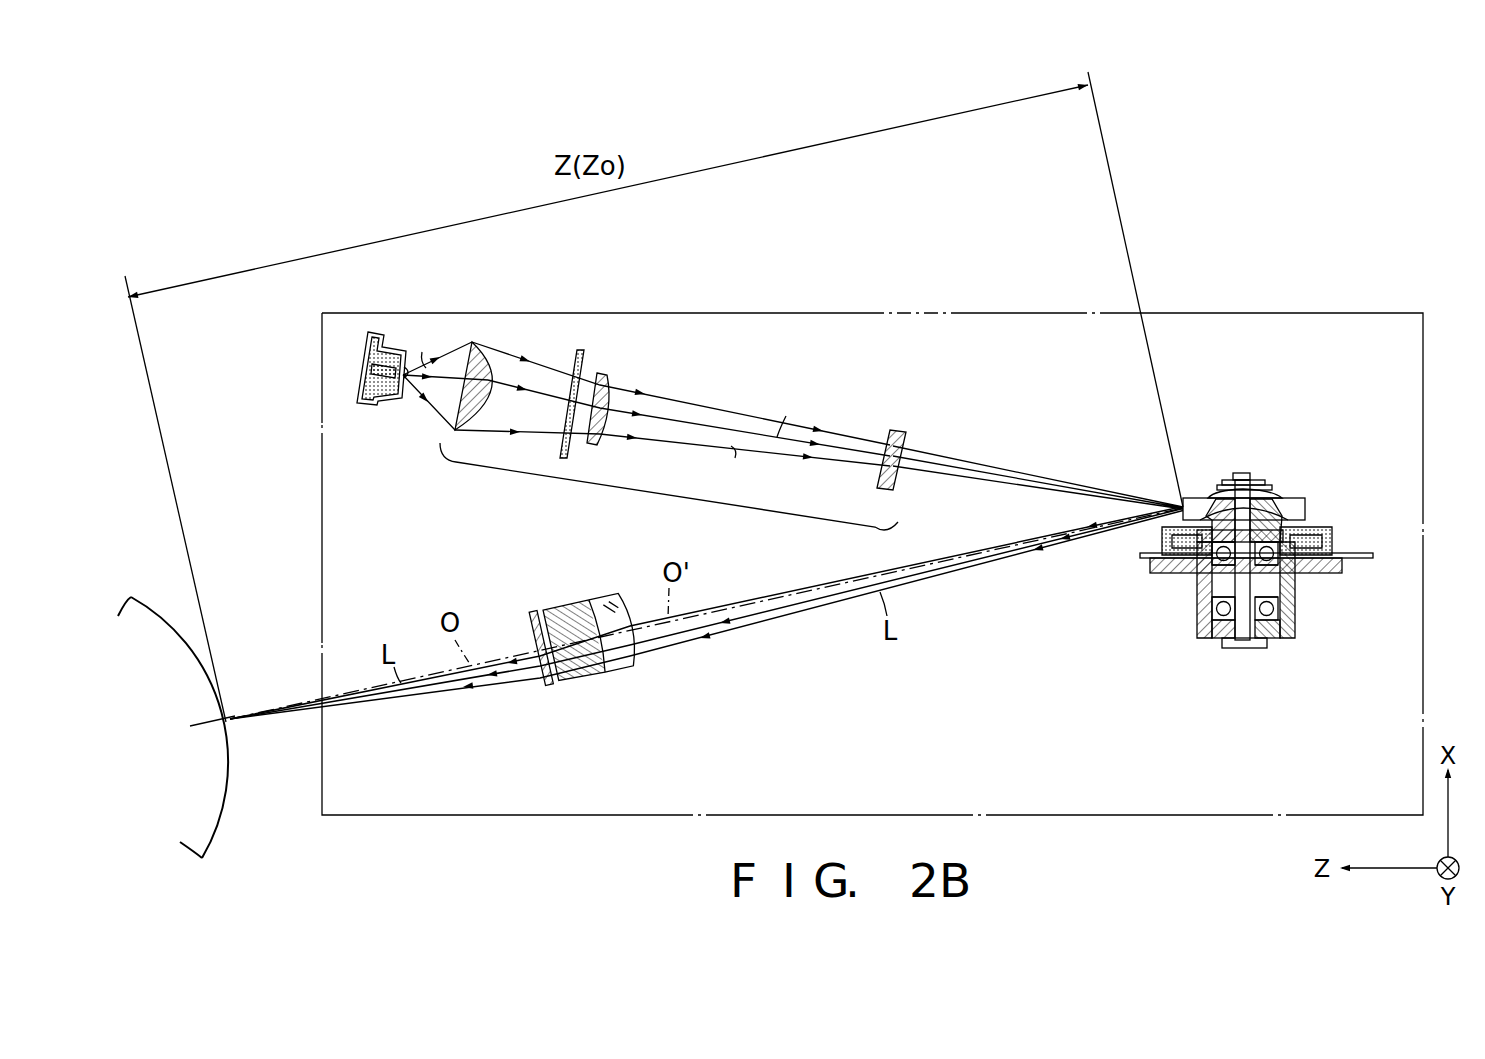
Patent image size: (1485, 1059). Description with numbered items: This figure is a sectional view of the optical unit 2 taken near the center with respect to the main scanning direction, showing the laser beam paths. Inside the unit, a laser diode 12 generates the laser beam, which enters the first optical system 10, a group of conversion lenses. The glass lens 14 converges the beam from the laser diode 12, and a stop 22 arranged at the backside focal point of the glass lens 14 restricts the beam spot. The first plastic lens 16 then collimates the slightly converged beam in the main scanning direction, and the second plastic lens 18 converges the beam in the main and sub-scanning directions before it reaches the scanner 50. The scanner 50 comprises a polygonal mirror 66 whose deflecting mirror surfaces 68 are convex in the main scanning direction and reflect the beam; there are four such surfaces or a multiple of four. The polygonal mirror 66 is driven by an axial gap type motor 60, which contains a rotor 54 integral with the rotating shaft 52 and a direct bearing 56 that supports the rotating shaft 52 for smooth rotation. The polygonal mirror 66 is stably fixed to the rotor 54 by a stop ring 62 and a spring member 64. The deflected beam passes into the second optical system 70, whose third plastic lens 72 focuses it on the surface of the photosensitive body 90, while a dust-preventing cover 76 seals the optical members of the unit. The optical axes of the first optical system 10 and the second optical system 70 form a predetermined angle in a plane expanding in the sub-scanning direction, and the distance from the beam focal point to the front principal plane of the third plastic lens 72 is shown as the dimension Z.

The optical unit 2 is at (1236, 310).
The first optical system 10 is at (680, 498).
The laser diode 12 is at (369, 406).
The glass lens 14 is at (480, 347).
The first plastic lens 16 is at (607, 386).
The second plastic lens 18 is at (900, 432).
The stop 22 is at (584, 352).
The scanner 50 is at (1262, 554).
The rotating shaft 52 is at (1243, 472).
The rotor 54 is at (1332, 540).
The direct bearing 56 is at (1217, 632).
The axial gap type motor 60 is at (1197, 610).
The stop ring 62 is at (1263, 480).
The spring member 64 is at (1283, 492).
The polygonal mirror 66 is at (1194, 498).
The deflecting mirror surface 68 is at (1305, 508).
The second optical system 70 is at (591, 688).
The third plastic lens 72 is at (599, 672).
The dust-preventing cover 76 is at (561, 673).
The photosensitive body 90 is at (228, 780).